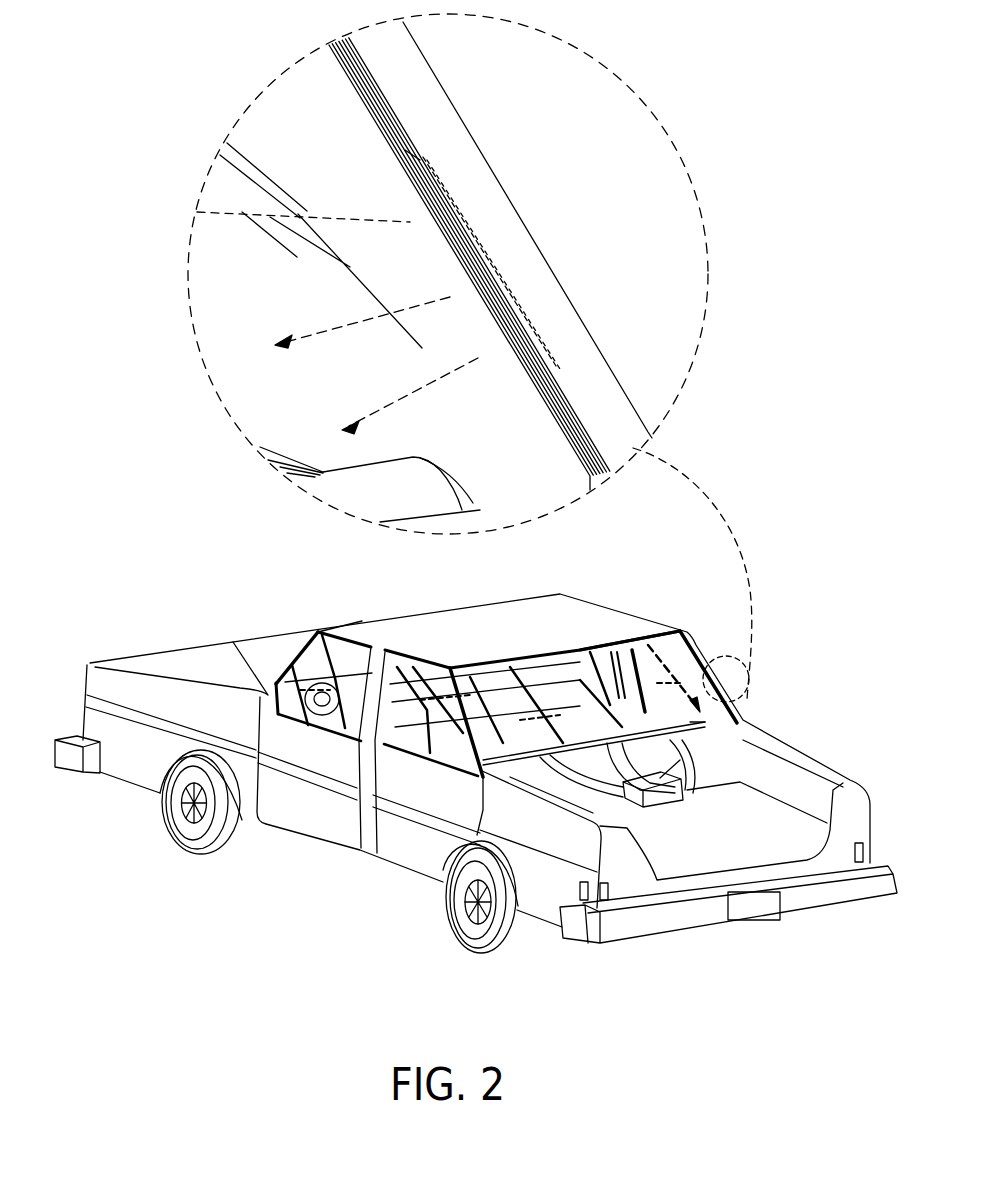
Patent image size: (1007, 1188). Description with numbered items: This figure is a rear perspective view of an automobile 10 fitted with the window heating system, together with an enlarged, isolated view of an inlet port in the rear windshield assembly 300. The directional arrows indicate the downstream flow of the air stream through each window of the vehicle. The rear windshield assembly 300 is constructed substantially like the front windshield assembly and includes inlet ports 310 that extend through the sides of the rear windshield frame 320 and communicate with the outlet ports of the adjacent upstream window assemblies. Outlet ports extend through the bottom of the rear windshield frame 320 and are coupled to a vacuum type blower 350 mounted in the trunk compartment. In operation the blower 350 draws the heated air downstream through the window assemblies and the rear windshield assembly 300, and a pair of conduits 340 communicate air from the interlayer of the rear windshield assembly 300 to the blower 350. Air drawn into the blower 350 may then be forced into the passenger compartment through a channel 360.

The vehicle 10 is at (606, 555).
The rear windshield assembly 300 is at (668, 645).
The inlet ports 310 is at (473, 258).
The rear windshield frame 320 is at (710, 733).
The conduits 340 is at (507, 786).
The vacuum type blower 350 is at (664, 806).
The channel 360 is at (672, 790).